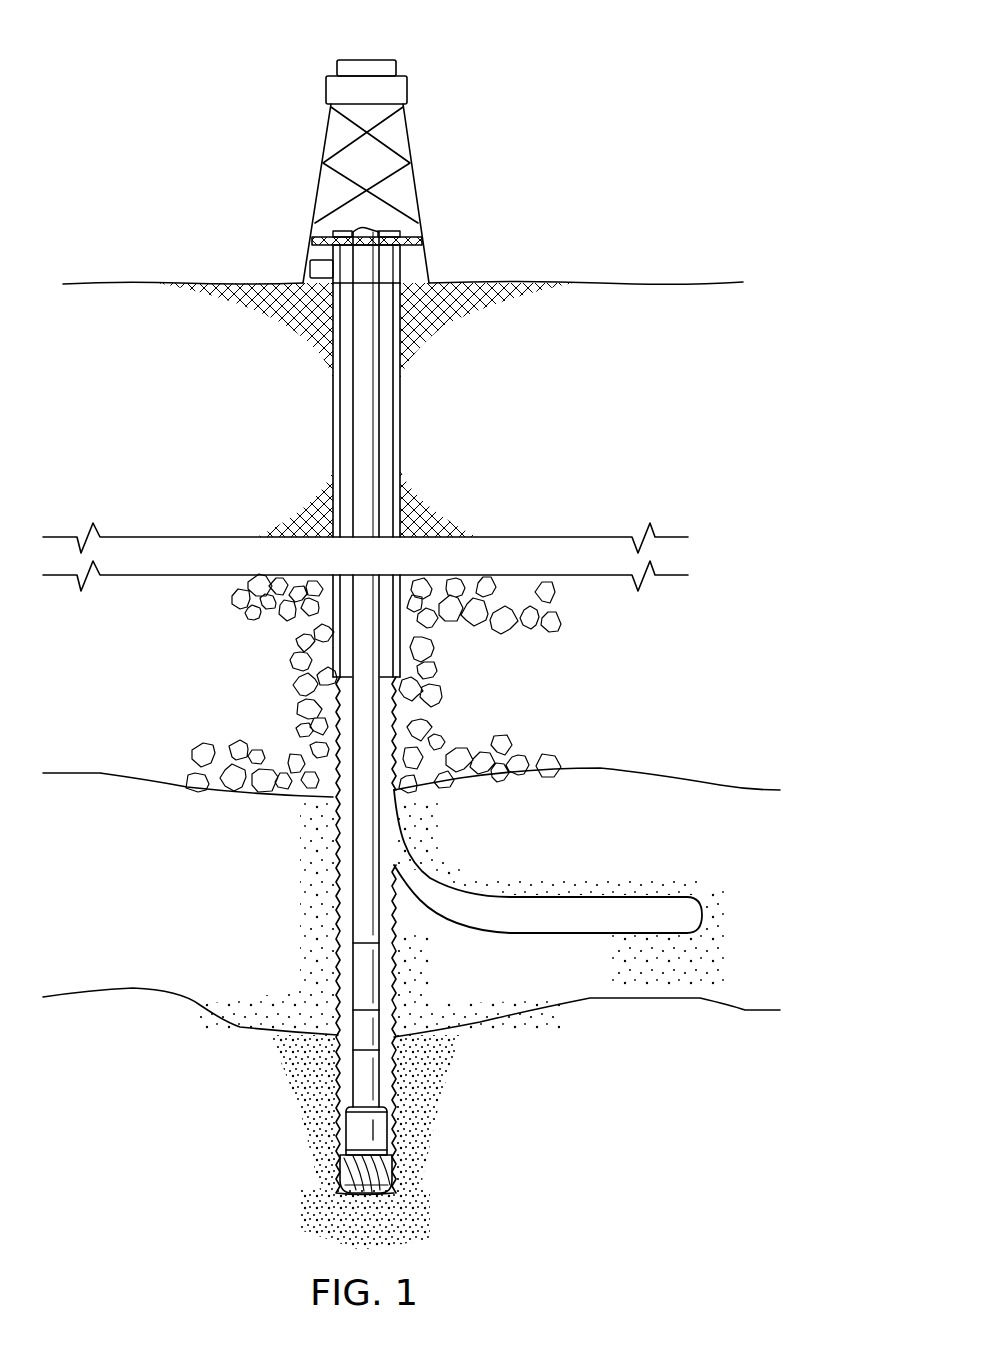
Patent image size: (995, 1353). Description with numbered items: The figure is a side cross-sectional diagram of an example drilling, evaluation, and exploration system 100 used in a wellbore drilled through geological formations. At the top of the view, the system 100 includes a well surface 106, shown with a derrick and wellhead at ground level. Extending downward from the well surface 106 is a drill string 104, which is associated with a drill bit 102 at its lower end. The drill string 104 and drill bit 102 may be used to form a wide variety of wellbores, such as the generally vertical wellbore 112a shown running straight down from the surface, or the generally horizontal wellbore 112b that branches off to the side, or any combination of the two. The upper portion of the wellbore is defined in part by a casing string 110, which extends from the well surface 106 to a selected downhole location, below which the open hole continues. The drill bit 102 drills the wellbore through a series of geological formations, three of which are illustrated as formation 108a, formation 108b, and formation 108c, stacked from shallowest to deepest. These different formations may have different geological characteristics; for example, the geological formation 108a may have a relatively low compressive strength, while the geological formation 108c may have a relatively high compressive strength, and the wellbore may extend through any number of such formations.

The drilling, evaluation, and exploration system 100 is at (568, 68).
The drill bit 102 is at (313, 1174).
The drill string 104 is at (380, 431).
The well surface 106 is at (405, 265).
The geological formation 108a is at (562, 687).
The geological formation 108b is at (238, 922).
The geological formation 108c is at (517, 1153).
The casing string 110 is at (333, 455).
The generally vertical wellbore 112a is at (246, 657).
The generally horizontal wellbore 112b is at (570, 875).